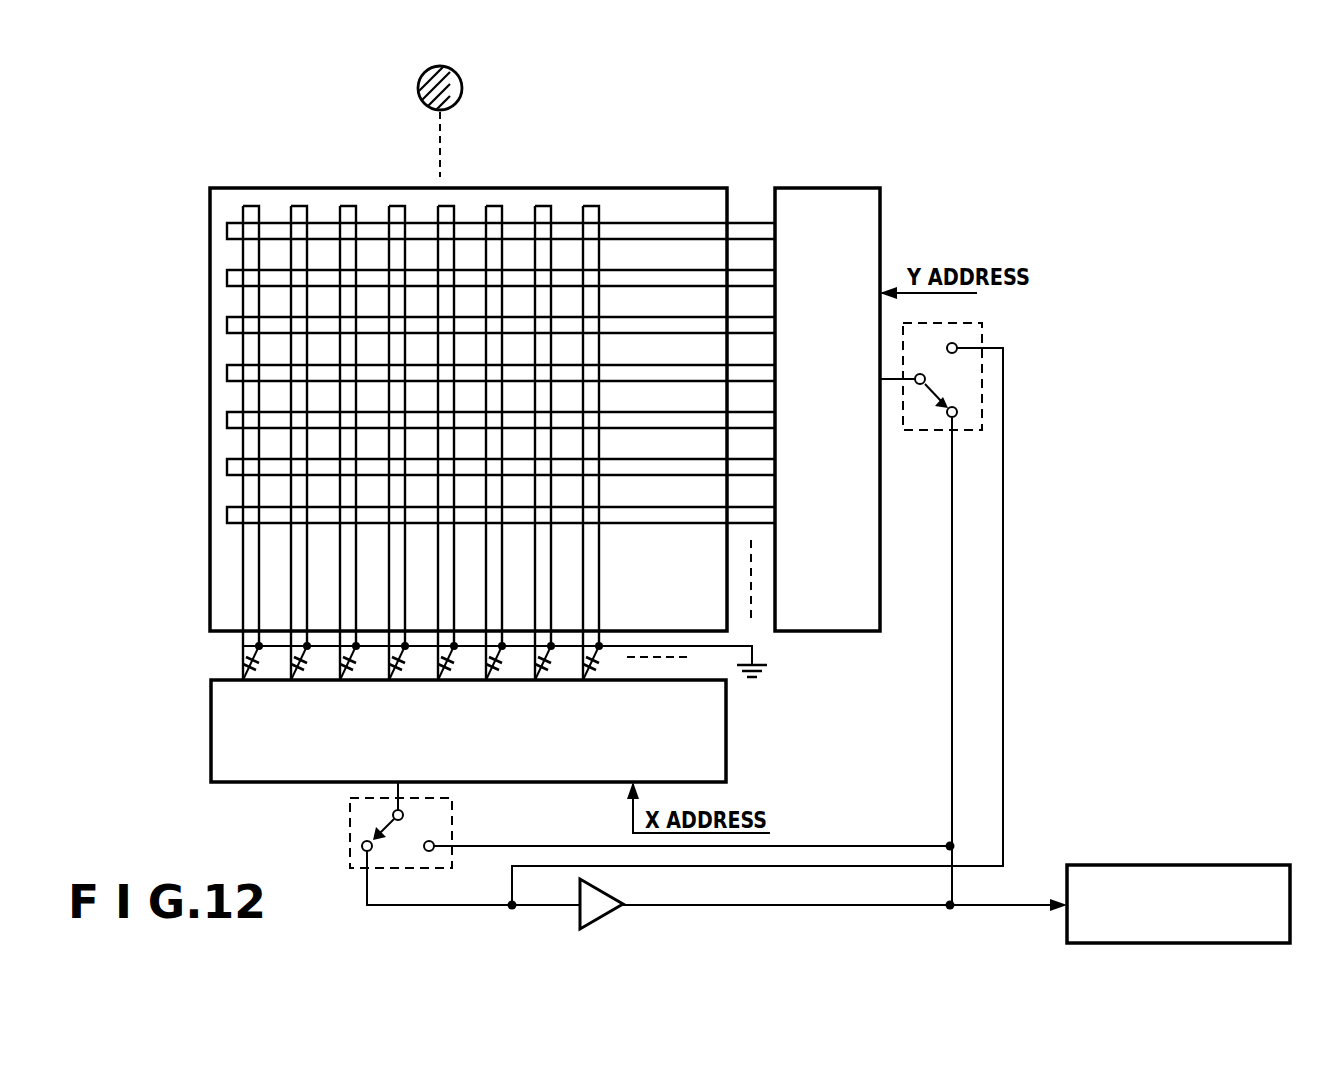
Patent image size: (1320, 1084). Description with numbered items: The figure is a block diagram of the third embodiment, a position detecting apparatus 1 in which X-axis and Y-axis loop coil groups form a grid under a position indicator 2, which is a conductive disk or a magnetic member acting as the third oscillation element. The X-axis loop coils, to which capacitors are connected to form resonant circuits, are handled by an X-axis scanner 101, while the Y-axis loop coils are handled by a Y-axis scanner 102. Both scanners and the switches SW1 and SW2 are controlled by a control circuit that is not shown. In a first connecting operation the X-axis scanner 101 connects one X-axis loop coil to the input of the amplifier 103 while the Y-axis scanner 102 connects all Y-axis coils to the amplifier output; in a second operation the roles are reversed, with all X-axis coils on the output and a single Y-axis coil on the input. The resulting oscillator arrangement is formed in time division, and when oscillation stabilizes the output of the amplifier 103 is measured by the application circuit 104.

The coordinate input tablet sensor 1 is at (685, 178).
The position indicator 2 is at (462, 93).
The X-axis scanner 101 is at (210, 750).
The Y-axis scanner 102 is at (883, 212).
The amplifier 103 is at (604, 891).
The application circuit 104 is at (1233, 864).
The switch SW1 is at (350, 830).
The switch SW2 is at (920, 431).